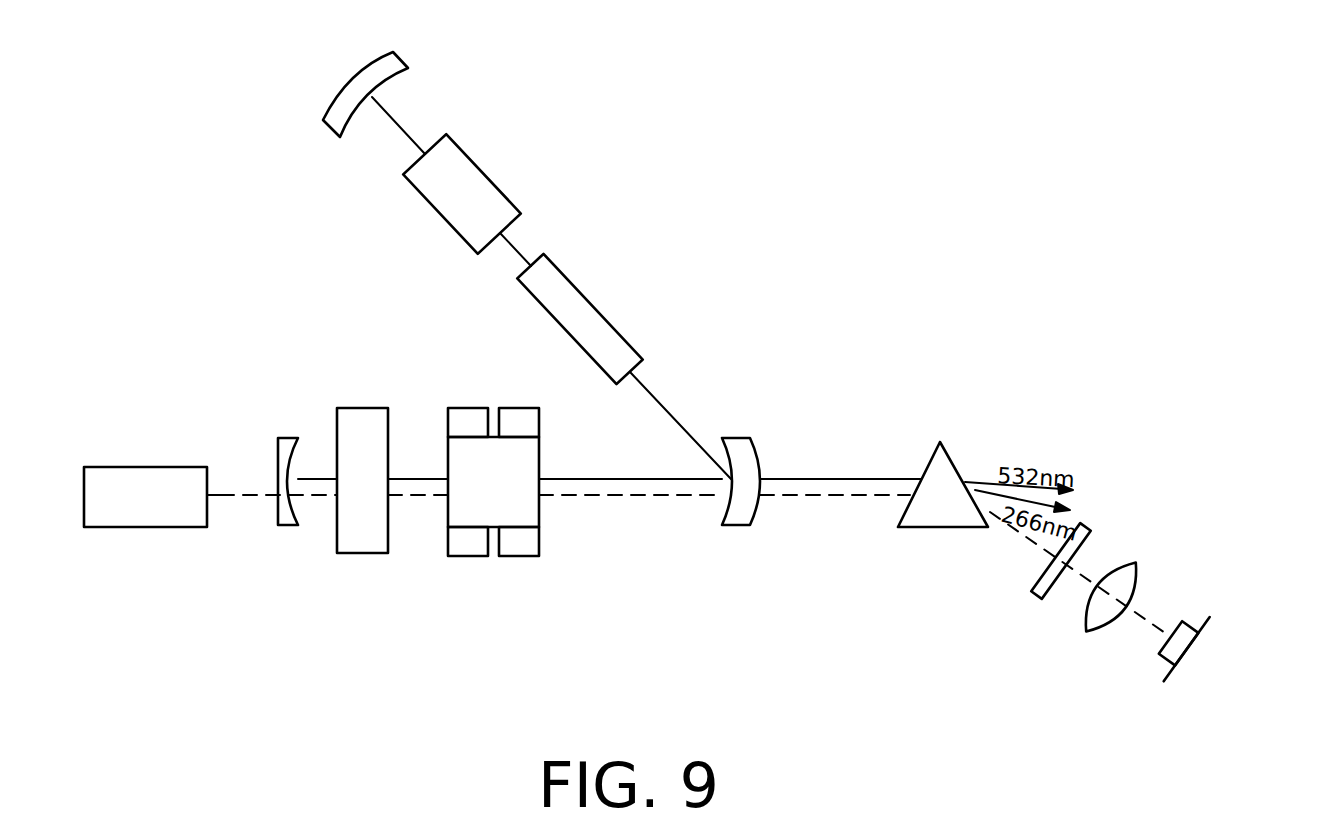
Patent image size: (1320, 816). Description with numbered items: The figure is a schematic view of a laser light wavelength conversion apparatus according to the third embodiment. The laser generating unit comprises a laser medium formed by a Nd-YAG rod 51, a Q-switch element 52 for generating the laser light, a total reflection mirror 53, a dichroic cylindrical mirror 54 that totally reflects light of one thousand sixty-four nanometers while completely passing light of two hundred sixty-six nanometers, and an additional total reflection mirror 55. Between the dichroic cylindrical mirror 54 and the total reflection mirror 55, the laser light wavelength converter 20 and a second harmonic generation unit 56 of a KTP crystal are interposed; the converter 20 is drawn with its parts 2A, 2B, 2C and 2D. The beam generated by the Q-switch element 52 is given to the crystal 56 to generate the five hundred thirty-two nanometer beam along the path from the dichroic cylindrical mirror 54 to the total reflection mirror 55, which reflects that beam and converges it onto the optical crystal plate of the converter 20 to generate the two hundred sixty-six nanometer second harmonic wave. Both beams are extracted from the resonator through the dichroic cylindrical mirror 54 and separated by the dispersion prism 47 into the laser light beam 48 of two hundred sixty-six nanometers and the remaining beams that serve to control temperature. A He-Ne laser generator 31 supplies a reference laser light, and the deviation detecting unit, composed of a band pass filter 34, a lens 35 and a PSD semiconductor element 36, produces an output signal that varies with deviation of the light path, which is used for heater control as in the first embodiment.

The He-Ne laser generator 31 is at (138, 527).
The total reflection mirror 55 is at (285, 437).
The second harmonic generation unit 56 is at (362, 408).
The laser light wavelength converter 20 is at (493, 517).
The electrode 2A is at (463, 556).
The electrode 2B is at (526, 578).
The electrode 2C is at (458, 408).
The electrode 2D is at (513, 408).
The dichroic cylindrical mirror 54 is at (737, 438).
The total reflection mirror 53 is at (405, 62).
The Q-switch element 52 is at (487, 172).
The Nd-YAG rod 51 is at (598, 312).
The dispersion prism 47 is at (948, 453).
The laser light beam of 266 nm 48 is at (994, 497).
The band pass filter 34 is at (1085, 522).
The lens 35 is at (1137, 560).
The PSD semiconductor element 36 is at (1185, 620).